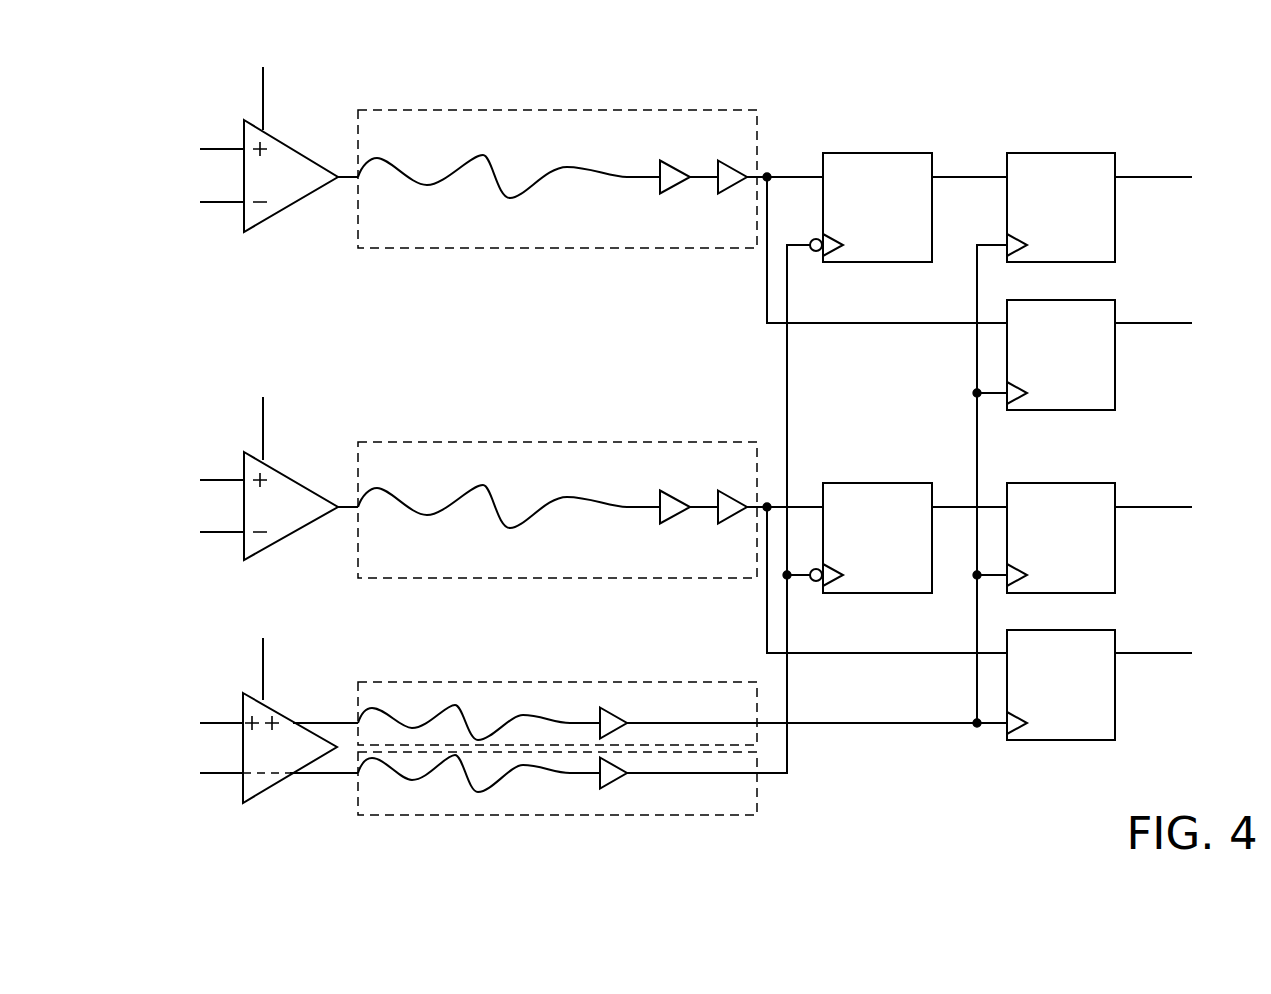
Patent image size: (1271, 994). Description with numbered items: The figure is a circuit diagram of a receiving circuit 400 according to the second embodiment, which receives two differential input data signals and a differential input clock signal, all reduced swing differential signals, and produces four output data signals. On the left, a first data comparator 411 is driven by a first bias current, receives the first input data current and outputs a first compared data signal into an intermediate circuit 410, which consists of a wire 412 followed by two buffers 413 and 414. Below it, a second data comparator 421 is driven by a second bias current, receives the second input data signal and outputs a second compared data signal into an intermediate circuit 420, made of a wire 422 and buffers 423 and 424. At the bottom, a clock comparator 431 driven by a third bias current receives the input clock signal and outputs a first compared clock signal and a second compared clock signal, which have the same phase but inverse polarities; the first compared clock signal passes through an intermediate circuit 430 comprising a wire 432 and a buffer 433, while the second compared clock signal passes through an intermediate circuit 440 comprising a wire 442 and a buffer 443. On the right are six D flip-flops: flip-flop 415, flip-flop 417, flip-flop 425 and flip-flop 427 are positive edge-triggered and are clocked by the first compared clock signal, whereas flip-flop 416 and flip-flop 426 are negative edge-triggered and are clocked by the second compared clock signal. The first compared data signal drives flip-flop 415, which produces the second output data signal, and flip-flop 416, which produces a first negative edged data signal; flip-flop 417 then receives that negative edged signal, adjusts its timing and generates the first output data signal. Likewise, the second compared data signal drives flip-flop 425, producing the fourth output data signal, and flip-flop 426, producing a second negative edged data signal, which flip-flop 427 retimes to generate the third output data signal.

The receiving circuit 400 is at (105, 75).
The intermediate circuit 410 is at (468, 248).
The data comparator 411 is at (293, 145).
The wire 412 is at (497, 163).
The buffer 413 is at (678, 160).
The buffer 414 is at (737, 160).
The flip-flop 415 is at (1115, 388).
The flip-flop 416 is at (875, 153).
The flip-flop 417 is at (1060, 153).
The intermediate circuit 420 is at (593, 442).
The data comparator 421 is at (285, 473).
The wire 422 is at (497, 493).
The buffer 423 is at (678, 490).
The buffer 424 is at (737, 490).
The flip-flop 425 is at (1115, 717).
The flip-flop 426 is at (877, 593).
The flip-flop 427 is at (1115, 568).
The intermediate circuit 430 is at (553, 682).
The clock comparator 431 is at (285, 713).
The wire 432 is at (472, 703).
The buffer 433 is at (617, 707).
The intermediate circuit 440 is at (757, 795).
The wire 442 is at (413, 780).
The buffer 443 is at (613, 787).